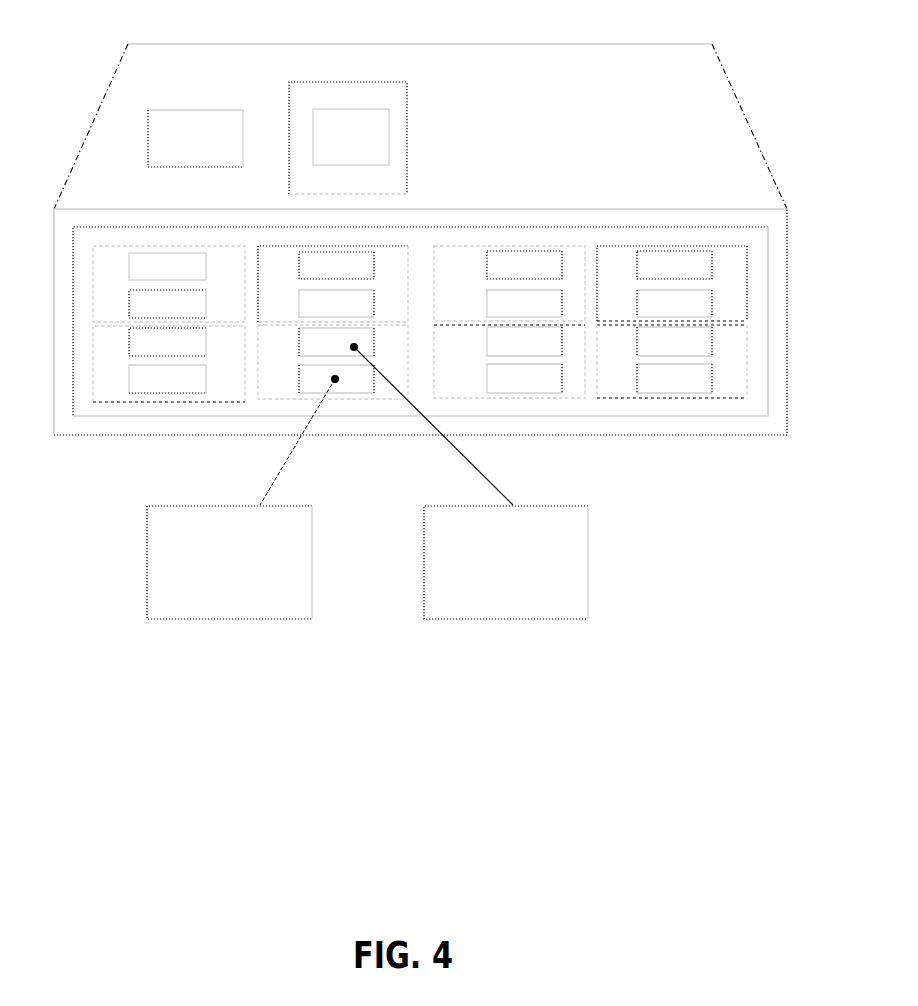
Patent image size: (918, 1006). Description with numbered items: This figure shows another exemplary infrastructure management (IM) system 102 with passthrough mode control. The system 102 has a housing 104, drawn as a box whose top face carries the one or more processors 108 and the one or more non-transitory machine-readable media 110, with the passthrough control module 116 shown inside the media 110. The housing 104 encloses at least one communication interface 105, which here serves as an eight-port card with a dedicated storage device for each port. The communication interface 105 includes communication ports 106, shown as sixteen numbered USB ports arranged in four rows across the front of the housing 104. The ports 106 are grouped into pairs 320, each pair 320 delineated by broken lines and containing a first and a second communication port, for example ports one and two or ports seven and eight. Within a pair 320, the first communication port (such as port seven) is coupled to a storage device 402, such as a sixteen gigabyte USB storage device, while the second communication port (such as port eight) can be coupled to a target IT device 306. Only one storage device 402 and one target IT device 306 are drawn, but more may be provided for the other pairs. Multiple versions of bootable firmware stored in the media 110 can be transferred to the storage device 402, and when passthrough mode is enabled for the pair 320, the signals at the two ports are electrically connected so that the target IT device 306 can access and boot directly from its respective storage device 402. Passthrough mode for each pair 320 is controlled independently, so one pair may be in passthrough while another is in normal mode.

The infrastructure management system 102 is at (725, 82).
The housing 104 is at (563, 210).
The communication interface 105 is at (83, 403).
The communication ports 106 is at (186, 303).
The processor 108 is at (195, 138).
The non-transitory machine-readable media 110 is at (399, 134).
The passthrough control module 116 is at (407, 137).
The pair of communication ports 320 is at (267, 400).
The target IT device 306 is at (243, 497).
The storage device 402 is at (469, 481).